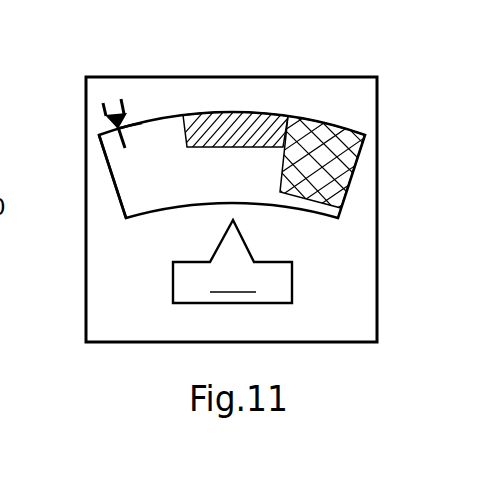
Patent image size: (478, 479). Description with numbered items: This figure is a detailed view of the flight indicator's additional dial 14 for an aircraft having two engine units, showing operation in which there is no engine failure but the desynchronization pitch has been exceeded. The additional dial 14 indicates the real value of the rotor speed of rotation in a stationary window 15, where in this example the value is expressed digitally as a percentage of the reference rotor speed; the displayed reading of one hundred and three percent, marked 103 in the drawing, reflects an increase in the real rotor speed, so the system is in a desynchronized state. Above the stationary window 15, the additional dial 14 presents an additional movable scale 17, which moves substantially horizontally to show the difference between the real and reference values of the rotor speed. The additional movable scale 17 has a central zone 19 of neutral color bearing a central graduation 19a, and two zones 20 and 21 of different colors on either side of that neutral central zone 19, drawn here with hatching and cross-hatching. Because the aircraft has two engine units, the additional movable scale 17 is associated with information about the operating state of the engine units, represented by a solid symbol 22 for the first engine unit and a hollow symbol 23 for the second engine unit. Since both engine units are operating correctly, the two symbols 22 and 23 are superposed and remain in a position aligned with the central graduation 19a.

The additional dial 14 is at (334, 352).
The stationary window 15 is at (272, 303).
The additional movable scale 17 is at (104, 194).
The central zone 19 is at (127, 163).
The central graduation 19a is at (125, 138).
The zone 20 is at (228, 134).
The zone 21 is at (337, 180).
The solid symbol 22 is at (118, 103).
The hollow symbol 23 is at (124, 110).
The displayed value 103 is at (233, 280).